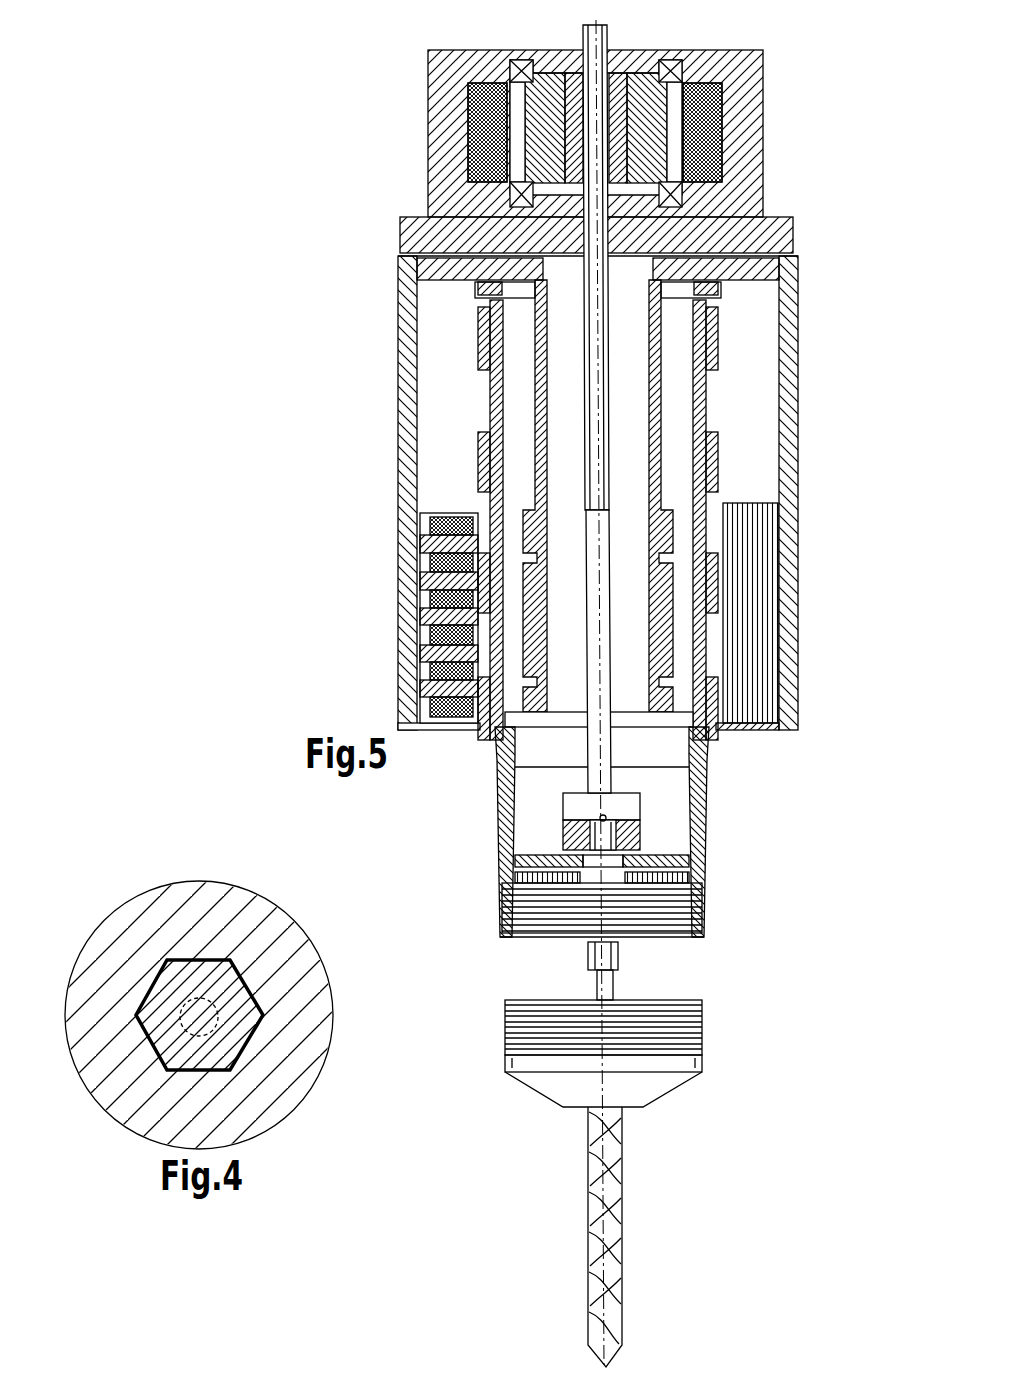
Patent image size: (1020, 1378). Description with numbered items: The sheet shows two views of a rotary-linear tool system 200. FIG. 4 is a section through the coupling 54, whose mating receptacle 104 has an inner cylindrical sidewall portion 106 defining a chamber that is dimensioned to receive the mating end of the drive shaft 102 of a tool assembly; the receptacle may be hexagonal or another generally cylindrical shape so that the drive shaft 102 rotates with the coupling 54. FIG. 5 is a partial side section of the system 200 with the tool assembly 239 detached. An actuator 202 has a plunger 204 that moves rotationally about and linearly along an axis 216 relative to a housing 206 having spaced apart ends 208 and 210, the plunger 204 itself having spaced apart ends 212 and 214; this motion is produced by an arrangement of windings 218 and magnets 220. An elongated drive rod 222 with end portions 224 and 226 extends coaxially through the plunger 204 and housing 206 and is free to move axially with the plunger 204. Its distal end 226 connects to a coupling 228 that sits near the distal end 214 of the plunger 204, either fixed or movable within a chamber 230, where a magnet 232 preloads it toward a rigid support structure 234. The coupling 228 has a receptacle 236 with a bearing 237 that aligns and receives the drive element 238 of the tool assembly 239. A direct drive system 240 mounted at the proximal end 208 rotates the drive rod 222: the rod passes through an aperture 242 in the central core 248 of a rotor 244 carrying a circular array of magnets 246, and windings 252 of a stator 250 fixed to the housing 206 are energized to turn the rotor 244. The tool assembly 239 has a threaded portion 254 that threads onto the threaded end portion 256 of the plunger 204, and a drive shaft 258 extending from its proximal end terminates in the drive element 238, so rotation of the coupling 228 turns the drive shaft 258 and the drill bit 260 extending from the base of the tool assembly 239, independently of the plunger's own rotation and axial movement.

In FIG. 4, the coupling 54 is at (272, 1073).
In FIG. 4, the drive shaft 102 is at (232, 1012).
In FIG. 4, the mating receptacle 104 is at (213, 942).
In FIG. 4, the inner cylindrical sidewall portion 106 is at (255, 1037).
In FIG. 5, the system 200 is at (582, 685).
In FIG. 5, the actuator 202 is at (797, 378).
In FIG. 5, the plunger 204 is at (711, 764).
In FIG. 5, the housing 206 is at (800, 586).
In FIG. 5, the proximal end 208 is at (405, 222).
In FIG. 5, the end 210 is at (450, 733).
In FIG. 5, the end 212 is at (712, 300).
In FIG. 5, the distal end 214 is at (703, 937).
In FIG. 5, the axis 216 is at (603, 663).
In FIG. 5, the windings 218 is at (425, 560).
In FIG. 5, the magnets 220 is at (478, 458).
In FIG. 5, the elongated drive rod 222 is at (584, 632).
In FIG. 5, the end portion 224 is at (606, 22).
In FIG. 5, the distal end 226 is at (577, 778).
In FIG. 5, the coupling 228 is at (642, 832).
In FIG. 5, the chamber 230 is at (700, 792).
In FIG. 5, the magnet 232 is at (533, 856).
In FIG. 5, the support structure 234 is at (693, 877).
In FIG. 5, the receptacle 236 is at (588, 835).
In FIG. 5, the bearing 237 is at (606, 818).
In FIG. 5, the drive element 238 is at (588, 950).
In FIG. 5, the tool assembly 239 is at (704, 1057).
In FIG. 5, the drive system 240 is at (583, 110).
In FIG. 5, the aperture 242 is at (580, 64).
In FIG. 5, the rotor 244 is at (645, 118).
In FIG. 5, the magnets 246 is at (652, 142).
In FIG. 5, the central core 248 is at (580, 72).
In FIG. 5, the stator 250 is at (433, 70).
In FIG. 5, the windings 252 is at (468, 150).
In FIG. 5, the threaded portion 254 is at (702, 1012).
In FIG. 5, the threaded end portion 256 is at (697, 920).
In FIG. 5, the drive shaft 258 is at (613, 990).
In FIG. 5, the drill bit 260 is at (614, 1233).